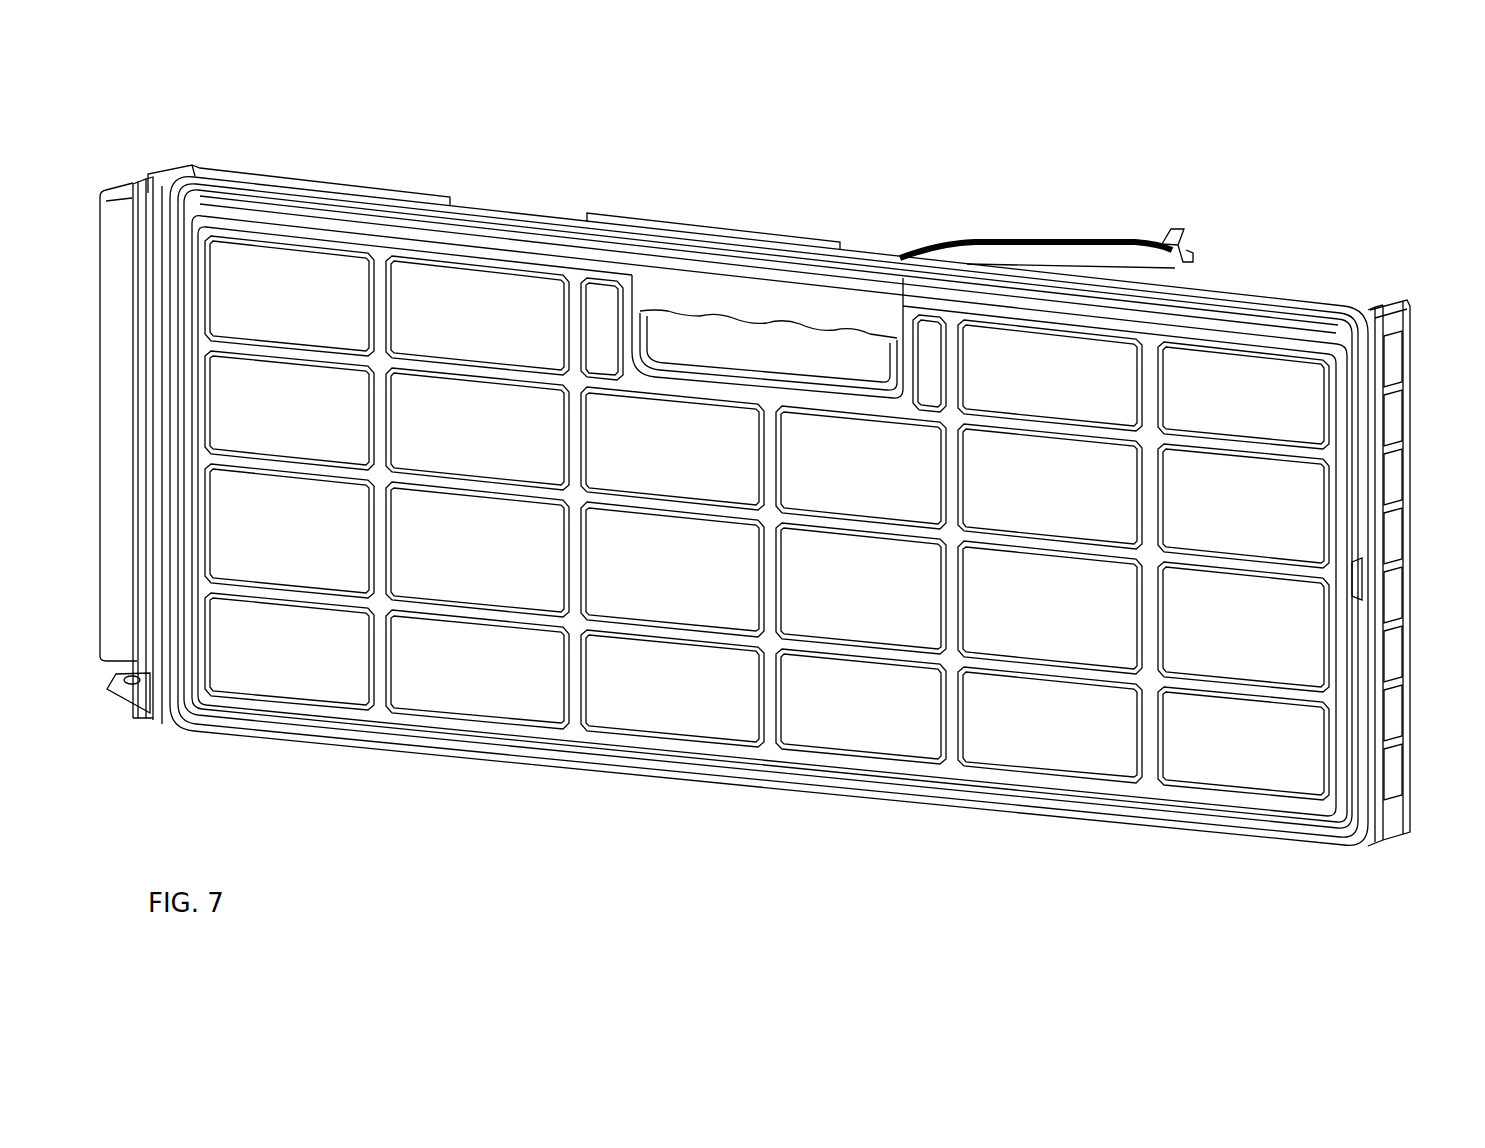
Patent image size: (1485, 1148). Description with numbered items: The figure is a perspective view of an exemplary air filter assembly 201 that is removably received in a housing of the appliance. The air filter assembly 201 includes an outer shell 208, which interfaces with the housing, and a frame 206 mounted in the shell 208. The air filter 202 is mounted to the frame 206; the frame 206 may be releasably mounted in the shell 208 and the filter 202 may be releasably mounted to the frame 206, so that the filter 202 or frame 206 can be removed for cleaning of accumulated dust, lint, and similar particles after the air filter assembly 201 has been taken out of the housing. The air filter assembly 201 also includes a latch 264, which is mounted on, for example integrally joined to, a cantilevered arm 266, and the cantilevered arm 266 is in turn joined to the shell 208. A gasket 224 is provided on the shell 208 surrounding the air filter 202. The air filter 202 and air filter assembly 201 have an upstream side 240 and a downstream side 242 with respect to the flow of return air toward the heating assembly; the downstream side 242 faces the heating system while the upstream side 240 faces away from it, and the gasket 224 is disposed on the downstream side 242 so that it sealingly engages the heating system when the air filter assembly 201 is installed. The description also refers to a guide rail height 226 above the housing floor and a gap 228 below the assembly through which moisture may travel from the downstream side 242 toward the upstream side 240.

The air filter assembly 201 is at (418, 128).
The air filter 202 is at (690, 590).
The frame 206 is at (447, 723).
The outer shell 208 is at (1365, 840).
The gasket 224 is at (222, 728).
The height 226 is at (680, 285).
The gap 228 is at (825, 318).
The upstream side 240 is at (1420, 582).
The downstream side 242 is at (985, 816).
The latch 264 is at (1135, 232).
The cantilevered arm 266 is at (1047, 250).